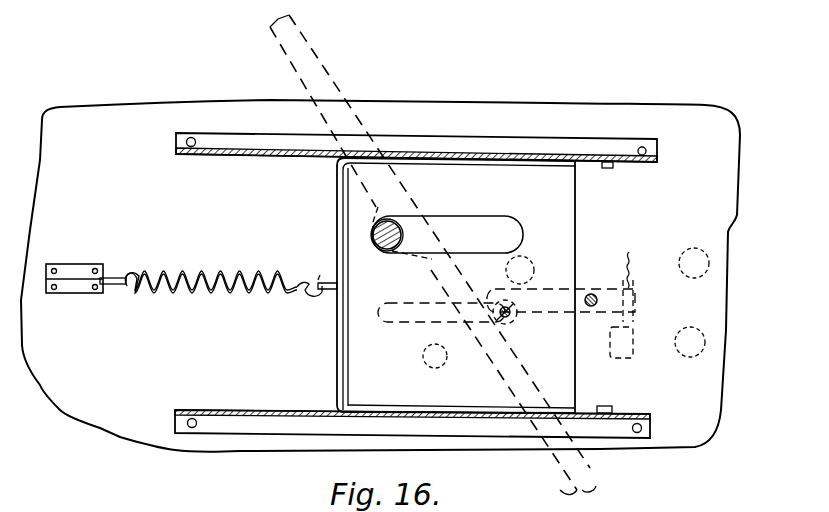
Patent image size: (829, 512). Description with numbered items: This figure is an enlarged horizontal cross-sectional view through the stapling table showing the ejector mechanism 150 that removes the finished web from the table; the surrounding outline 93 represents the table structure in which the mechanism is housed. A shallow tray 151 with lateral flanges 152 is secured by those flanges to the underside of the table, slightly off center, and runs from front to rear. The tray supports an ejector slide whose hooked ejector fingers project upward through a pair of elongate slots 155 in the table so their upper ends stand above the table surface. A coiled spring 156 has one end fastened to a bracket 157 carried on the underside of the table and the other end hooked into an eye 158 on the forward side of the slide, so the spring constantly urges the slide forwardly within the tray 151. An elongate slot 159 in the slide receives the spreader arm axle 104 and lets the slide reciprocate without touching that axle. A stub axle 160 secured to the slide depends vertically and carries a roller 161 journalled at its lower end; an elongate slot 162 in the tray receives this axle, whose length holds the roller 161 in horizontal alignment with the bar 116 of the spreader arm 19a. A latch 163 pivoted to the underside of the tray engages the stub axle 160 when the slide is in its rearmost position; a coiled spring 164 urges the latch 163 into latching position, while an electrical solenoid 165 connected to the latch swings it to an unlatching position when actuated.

The spreader arm 19a is at (302, 70).
The mounting plate 93 is at (116, 422).
The spreader arm axle 104 is at (386, 251).
The bar 116 is at (594, 486).
The ejector mechanism 150 is at (597, 379).
The shallow tray 151 is at (652, 417).
The lateral flanges 152 is at (285, 156).
The elongate slots 155 is at (637, 398).
The coiled spring 156 is at (186, 292).
The bracket 157 is at (82, 297).
The eye 158 is at (322, 297).
The elongate slot 159 is at (500, 216).
The stub axle 160 is at (503, 314).
The roller 161 is at (514, 320).
The elongate slot 162 is at (452, 322).
The latch 163 is at (545, 291).
The coiled spring 164 is at (630, 272).
The electrical solenoid 165 is at (633, 342).